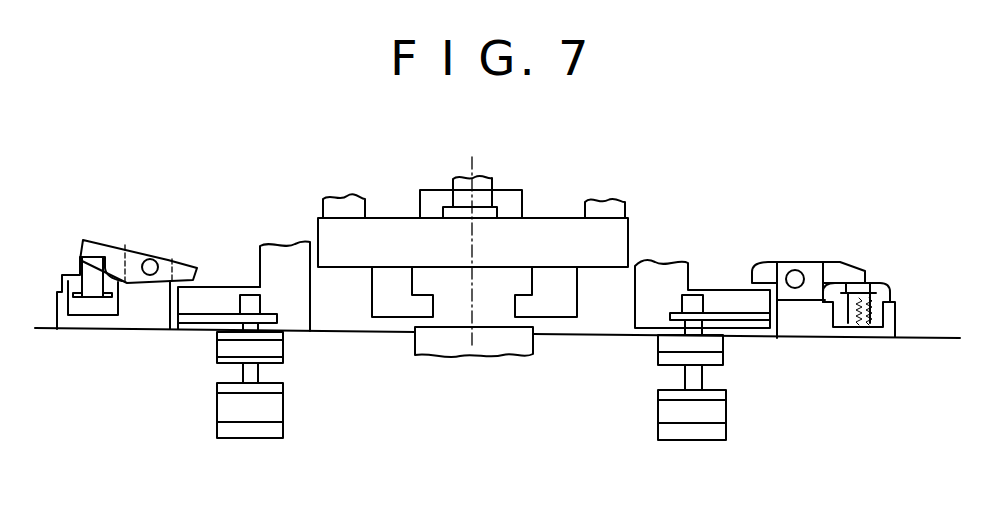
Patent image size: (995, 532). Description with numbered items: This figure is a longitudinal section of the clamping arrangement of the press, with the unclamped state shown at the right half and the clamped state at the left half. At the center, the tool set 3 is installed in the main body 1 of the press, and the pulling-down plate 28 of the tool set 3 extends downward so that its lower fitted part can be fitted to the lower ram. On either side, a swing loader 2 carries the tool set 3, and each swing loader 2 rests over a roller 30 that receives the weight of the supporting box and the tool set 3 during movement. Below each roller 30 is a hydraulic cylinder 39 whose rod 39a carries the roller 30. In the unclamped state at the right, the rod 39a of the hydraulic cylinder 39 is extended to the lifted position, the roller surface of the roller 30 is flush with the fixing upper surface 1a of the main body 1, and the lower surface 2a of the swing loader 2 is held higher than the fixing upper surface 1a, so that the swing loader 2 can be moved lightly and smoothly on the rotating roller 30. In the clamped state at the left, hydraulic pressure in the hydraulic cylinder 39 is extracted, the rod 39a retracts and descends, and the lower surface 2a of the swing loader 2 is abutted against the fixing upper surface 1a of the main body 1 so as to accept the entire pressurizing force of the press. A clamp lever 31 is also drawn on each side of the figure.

The main body of the press 1 is at (483, 410).
The fixing upper surface 1a is at (341, 322).
The swing loader 2 is at (250, 250).
The lower surface of the swing loader 2a is at (652, 336).
The tool set 3 is at (548, 191).
The pulling-down plate 28 is at (390, 291).
The roller 30 is at (250, 333).
The clamp lever 31 is at (158, 253).
The hydraulic cylinder 39 is at (230, 413).
The rod 39a is at (257, 375).